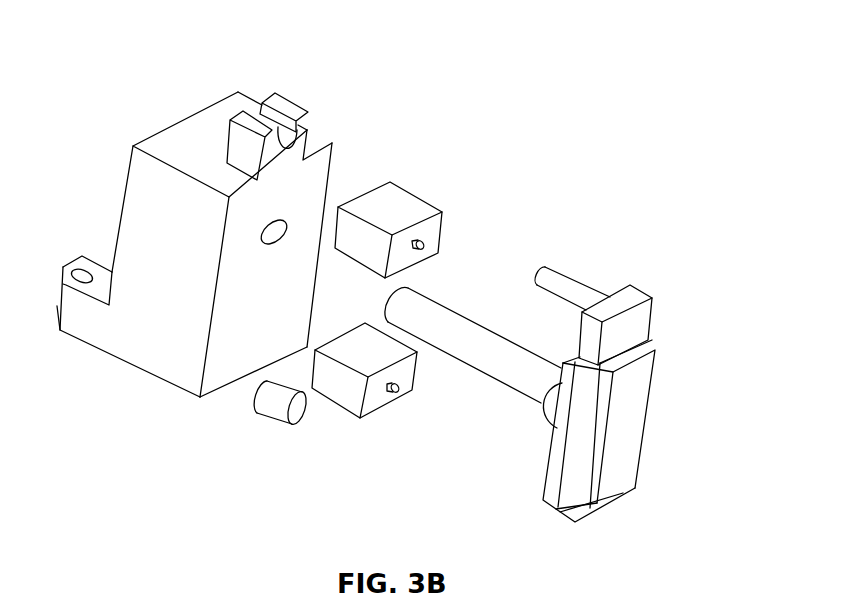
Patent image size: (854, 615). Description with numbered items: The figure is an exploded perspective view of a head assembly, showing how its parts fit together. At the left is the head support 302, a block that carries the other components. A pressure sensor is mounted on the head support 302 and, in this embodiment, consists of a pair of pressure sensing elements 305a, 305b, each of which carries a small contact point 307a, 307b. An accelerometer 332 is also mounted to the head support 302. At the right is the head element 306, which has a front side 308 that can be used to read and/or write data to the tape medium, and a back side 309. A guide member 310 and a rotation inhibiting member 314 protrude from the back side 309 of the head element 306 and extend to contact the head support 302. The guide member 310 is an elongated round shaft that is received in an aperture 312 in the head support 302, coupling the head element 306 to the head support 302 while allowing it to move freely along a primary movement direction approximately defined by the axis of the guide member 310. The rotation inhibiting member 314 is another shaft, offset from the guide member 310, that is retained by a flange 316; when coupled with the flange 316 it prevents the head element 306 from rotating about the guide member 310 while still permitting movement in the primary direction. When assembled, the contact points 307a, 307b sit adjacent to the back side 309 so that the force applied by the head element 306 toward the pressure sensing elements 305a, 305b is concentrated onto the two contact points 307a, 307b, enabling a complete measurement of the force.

The head support 302 is at (198, 125).
The pressure sensing element 305a is at (368, 249).
The pressure sensing element 305b is at (347, 396).
The head element 306 is at (122, 38).
The contact point 307a is at (424, 246).
The contact point 307b is at (398, 393).
The front side 308 is at (632, 425).
The back side 309 is at (528, 494).
The guide member 310 is at (510, 377).
The aperture 312 is at (263, 245).
The rotation inhibiting member 314 is at (575, 287).
The flange 316 is at (282, 102).
The accelerometer 332 is at (272, 403).